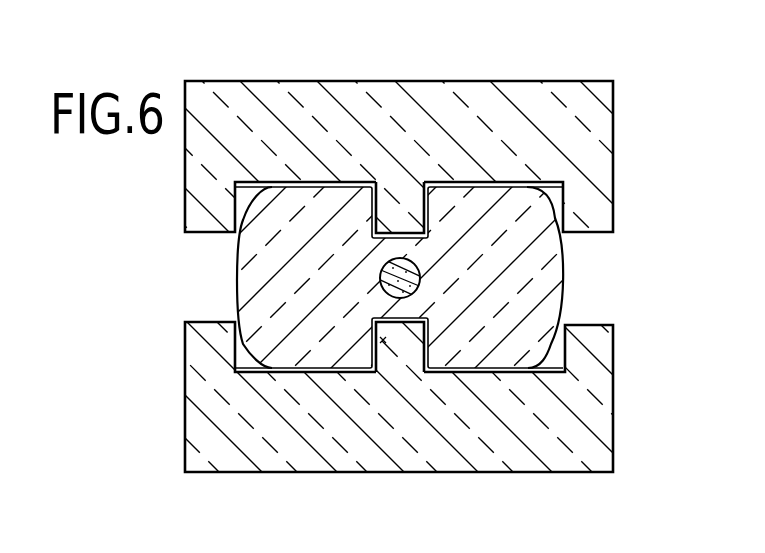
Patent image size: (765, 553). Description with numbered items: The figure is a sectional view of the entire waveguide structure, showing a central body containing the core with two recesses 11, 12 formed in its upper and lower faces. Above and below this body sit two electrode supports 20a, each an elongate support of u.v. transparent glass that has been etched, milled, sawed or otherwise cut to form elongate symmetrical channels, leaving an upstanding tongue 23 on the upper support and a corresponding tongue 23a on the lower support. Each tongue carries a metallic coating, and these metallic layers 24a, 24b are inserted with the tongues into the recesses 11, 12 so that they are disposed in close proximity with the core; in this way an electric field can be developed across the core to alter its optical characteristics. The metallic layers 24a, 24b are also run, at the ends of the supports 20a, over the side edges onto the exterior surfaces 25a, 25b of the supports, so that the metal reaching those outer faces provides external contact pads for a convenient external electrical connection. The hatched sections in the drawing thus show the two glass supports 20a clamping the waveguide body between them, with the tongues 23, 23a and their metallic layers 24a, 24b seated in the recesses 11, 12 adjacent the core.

The recess 11 is at (368, 210).
The recess 12 is at (383, 340).
The electrode support 20a is at (391, 276).
The upstanding tongue 23 is at (386, 212).
The upstanding tongue 23a is at (379, 338).
The metallic layer 24a is at (407, 323).
The metallic layer 24b is at (403, 228).
The exterior surface 25a is at (557, 473).
The exterior surface 25b is at (575, 82).